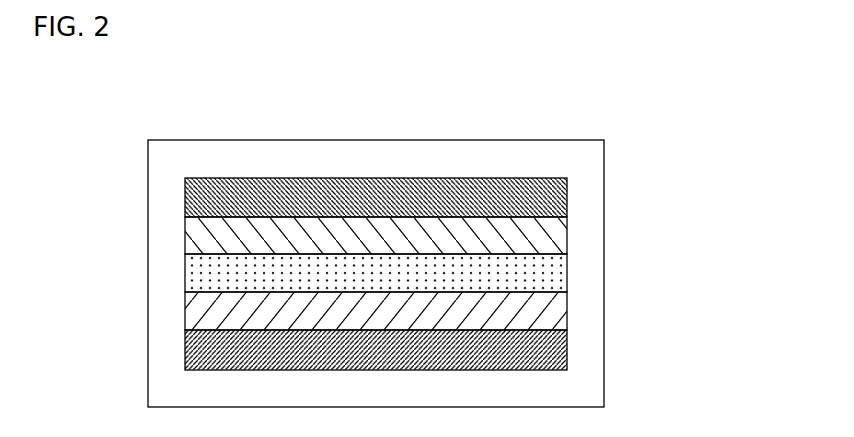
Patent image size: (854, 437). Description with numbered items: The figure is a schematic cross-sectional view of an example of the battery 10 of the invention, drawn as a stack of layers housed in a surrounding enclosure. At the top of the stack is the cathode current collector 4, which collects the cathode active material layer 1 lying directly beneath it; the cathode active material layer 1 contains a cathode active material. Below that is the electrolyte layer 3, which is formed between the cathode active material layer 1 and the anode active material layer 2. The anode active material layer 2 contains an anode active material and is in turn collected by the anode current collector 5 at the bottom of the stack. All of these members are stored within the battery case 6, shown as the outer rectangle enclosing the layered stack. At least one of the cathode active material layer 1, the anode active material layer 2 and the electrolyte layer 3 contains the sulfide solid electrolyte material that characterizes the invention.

The battery 10 is at (590, 101).
The battery case 6 is at (583, 152).
The cathode current collector 4 is at (567, 190).
The cathode active material layer 1 is at (553, 226).
The electrolyte layer 3 is at (553, 266).
The anode active material layer 2 is at (553, 305).
The anode current collector 5 is at (567, 342).